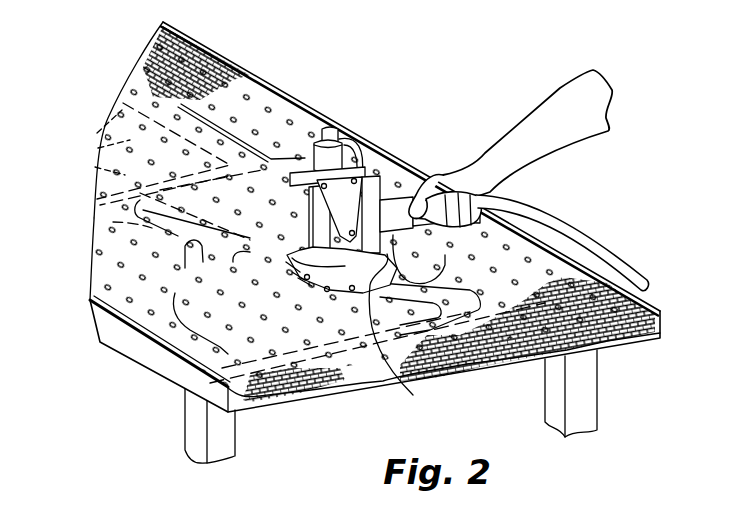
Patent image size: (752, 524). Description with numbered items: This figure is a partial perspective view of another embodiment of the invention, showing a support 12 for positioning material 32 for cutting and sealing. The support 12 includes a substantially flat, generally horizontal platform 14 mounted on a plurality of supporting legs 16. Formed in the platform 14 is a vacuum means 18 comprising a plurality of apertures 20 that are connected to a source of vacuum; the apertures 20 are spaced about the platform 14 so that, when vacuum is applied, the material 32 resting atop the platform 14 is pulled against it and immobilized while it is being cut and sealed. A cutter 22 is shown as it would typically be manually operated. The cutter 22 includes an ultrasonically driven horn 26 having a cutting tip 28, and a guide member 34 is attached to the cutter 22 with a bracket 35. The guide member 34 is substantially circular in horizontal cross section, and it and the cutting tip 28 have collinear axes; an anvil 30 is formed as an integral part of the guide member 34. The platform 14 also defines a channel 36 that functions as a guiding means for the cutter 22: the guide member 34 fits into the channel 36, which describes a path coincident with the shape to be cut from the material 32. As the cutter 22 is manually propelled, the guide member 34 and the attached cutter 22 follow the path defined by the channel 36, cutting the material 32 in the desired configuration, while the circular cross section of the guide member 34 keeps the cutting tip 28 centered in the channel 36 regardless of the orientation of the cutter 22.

The support 12 is at (308, 78).
The platform 14 is at (195, 385).
The supporting legs 16 is at (193, 436).
The vacuum means 18 is at (95, 120).
The apertures 20 is at (95, 167).
The cutter 22 is at (360, 124).
The ultrasonically driven horn 26 is at (113, 222).
The cutting tip 28 is at (296, 273).
The anvil 30 is at (300, 278).
The material 32 is at (275, 392).
The guide member 34 is at (290, 267).
The bracket 35 is at (406, 333).
The channel 36 is at (350, 265).